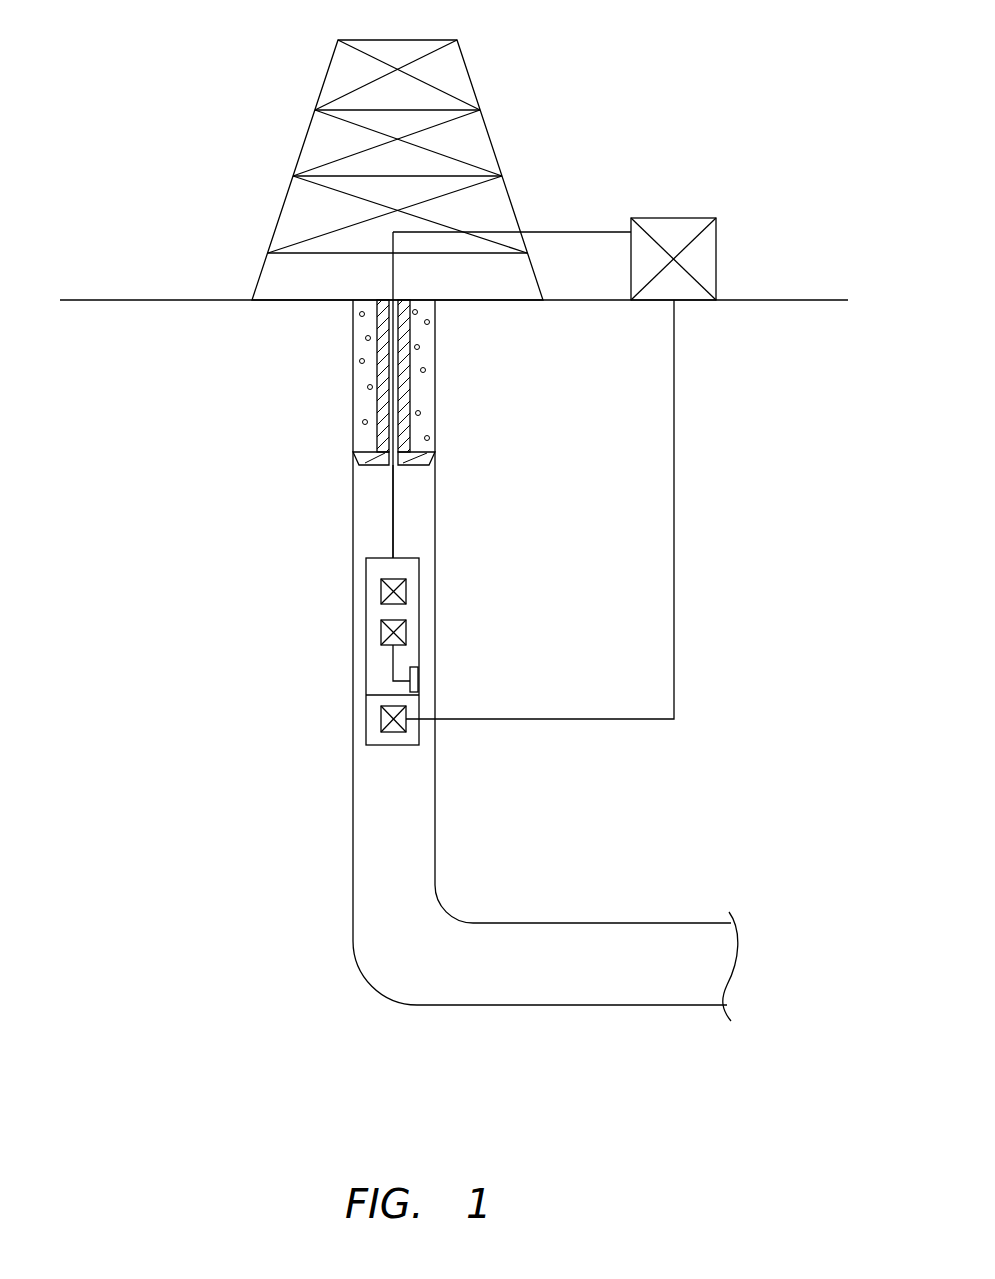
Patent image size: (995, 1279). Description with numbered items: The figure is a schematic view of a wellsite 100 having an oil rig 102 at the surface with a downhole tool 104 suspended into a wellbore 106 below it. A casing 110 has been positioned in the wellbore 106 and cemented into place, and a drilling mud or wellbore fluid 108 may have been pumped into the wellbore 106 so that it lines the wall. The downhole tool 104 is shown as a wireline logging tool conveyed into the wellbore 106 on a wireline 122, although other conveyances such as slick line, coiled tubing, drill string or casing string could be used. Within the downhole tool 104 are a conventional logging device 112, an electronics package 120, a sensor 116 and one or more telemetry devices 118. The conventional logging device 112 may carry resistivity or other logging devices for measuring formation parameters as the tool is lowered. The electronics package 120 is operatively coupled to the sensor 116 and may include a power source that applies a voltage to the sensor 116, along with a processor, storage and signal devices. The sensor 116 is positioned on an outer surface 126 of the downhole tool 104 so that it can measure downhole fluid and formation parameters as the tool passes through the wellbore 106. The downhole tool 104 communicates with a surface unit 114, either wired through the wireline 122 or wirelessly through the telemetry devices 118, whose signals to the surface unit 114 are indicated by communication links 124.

The wellsite 100 is at (817, 35).
The oil rig 102 is at (490, 128).
The downhole tool 104 is at (360, 588).
The wellbore 106 is at (435, 540).
The wellbore fluid 108 is at (427, 698).
The casing 110 is at (410, 384).
The conventional logging device 112 is at (406, 590).
The surface unit 114 is at (716, 245).
The sensor 116 is at (418, 676).
The telemetry device 118 is at (406, 728).
The electronics package 120 is at (406, 632).
The wireline 122 is at (412, 490).
The communication links 124 is at (674, 568).
The outer surface 126 is at (366, 674).